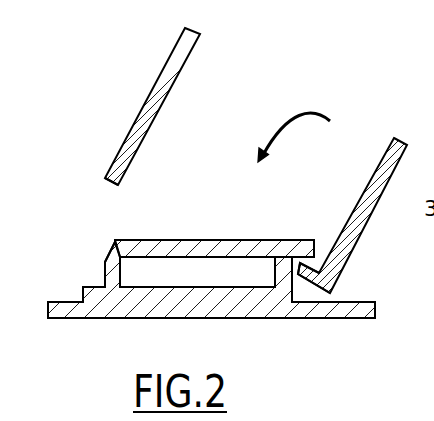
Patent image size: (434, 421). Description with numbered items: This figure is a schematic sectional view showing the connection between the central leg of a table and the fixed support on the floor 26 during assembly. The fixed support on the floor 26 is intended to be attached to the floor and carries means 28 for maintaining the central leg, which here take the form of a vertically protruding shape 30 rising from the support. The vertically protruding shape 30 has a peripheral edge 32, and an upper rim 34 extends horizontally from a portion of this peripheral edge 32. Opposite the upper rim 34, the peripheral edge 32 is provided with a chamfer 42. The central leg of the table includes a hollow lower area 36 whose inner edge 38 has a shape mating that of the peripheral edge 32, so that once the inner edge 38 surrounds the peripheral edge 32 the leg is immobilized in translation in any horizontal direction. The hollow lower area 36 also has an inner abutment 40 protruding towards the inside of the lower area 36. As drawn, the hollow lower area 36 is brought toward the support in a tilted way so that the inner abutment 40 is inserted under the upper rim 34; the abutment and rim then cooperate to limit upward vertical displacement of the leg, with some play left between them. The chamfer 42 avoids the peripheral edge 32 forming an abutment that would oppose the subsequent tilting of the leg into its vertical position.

The fixed support on the floor 26 is at (117, 320).
The means for maintaining the central leg 28 is at (75, 188).
The vertically protruding shape 30 is at (182, 247).
The peripheral edge 32 is at (295, 262).
The upper rim 34 is at (304, 250).
The hollow lower area 36 is at (153, 97).
The inner edge 38 is at (132, 163).
The inner abutment 40 is at (320, 282).
The chamfer 42 is at (115, 242).